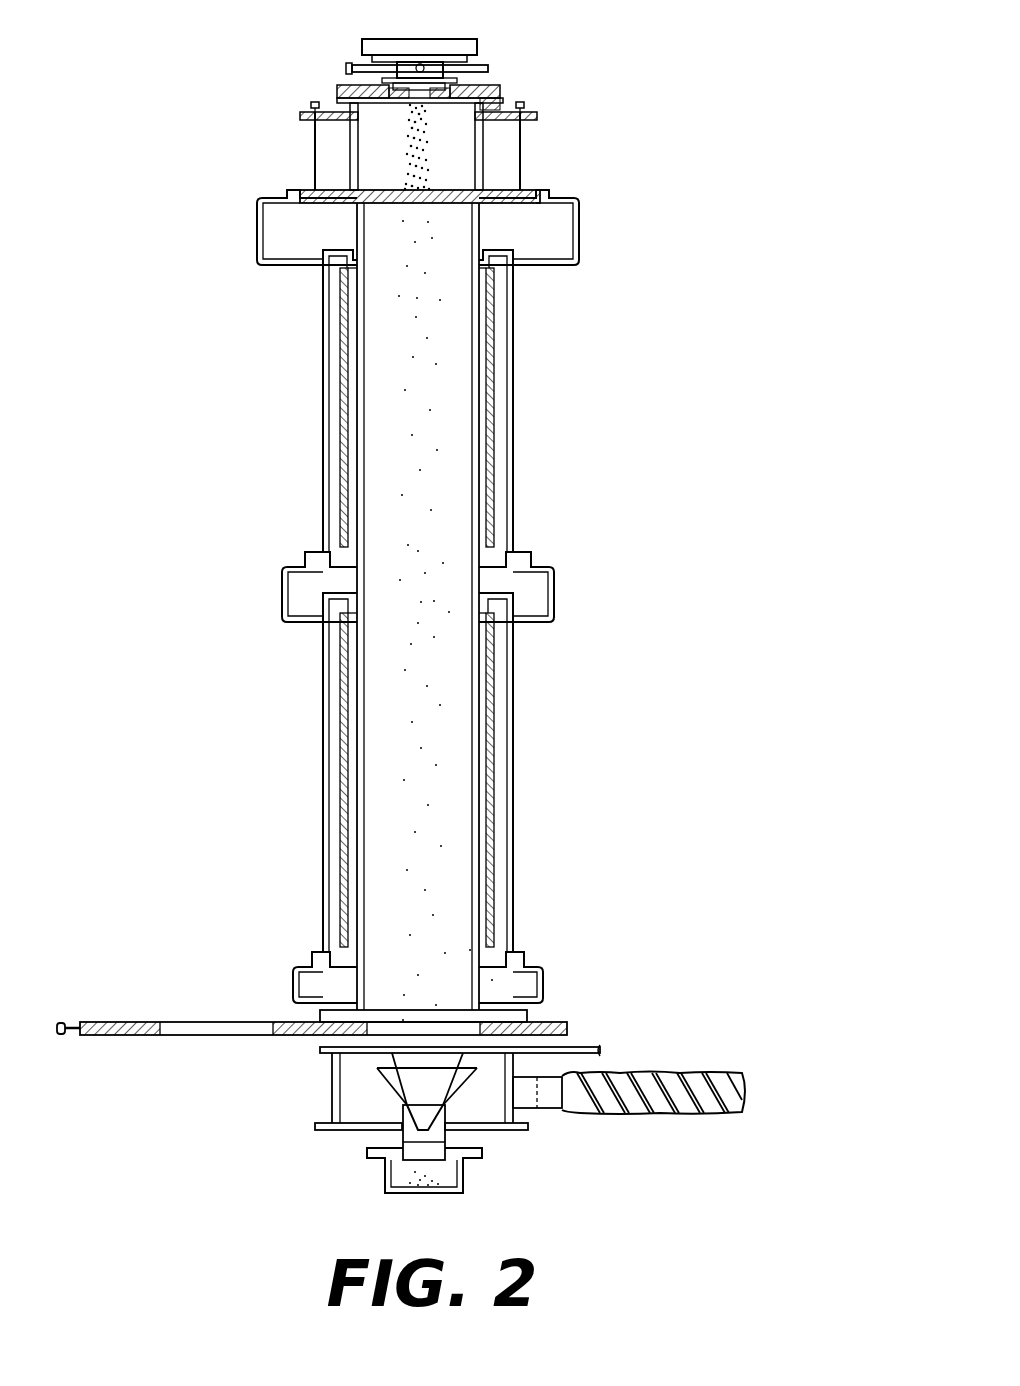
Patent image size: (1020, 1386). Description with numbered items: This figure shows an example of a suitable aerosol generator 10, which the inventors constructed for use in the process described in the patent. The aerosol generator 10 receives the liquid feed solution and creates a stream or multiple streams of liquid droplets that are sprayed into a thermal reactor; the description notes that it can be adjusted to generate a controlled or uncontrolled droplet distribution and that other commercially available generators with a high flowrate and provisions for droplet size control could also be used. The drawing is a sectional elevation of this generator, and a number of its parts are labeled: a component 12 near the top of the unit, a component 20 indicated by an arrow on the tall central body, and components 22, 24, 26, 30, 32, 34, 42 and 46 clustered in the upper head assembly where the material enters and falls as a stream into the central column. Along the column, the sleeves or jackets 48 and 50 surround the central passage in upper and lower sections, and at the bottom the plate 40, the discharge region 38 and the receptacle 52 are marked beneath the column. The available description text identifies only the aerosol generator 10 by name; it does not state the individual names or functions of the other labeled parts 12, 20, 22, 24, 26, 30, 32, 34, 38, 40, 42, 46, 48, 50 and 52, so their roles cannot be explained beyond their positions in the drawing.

The aerosol generator 10 is at (493, 33).
The actuating rod 12 is at (490, 68).
The column assembly 20 is at (288, 297).
The top plate 22 is at (345, 90).
The flange 24 is at (507, 98).
The upper cylinder 26 is at (383, 107).
The particulate material 30 is at (403, 187).
The cover plate 32 is at (418, 48).
The powder stream 34 is at (413, 152).
The discharge assembly 38 is at (420, 1136).
The bottom plate 40 is at (400, 1030).
The bolt 42 is at (483, 163).
The gasket plate 46 is at (338, 106).
The upper heating jacket 48 is at (502, 352).
The lower heating jacket 50 is at (510, 733).
The collection cup 52 is at (445, 1173).